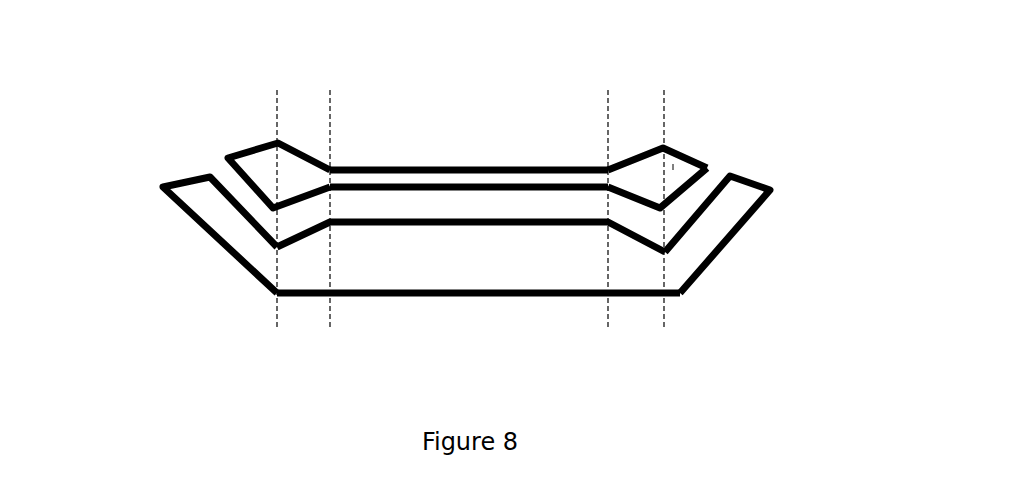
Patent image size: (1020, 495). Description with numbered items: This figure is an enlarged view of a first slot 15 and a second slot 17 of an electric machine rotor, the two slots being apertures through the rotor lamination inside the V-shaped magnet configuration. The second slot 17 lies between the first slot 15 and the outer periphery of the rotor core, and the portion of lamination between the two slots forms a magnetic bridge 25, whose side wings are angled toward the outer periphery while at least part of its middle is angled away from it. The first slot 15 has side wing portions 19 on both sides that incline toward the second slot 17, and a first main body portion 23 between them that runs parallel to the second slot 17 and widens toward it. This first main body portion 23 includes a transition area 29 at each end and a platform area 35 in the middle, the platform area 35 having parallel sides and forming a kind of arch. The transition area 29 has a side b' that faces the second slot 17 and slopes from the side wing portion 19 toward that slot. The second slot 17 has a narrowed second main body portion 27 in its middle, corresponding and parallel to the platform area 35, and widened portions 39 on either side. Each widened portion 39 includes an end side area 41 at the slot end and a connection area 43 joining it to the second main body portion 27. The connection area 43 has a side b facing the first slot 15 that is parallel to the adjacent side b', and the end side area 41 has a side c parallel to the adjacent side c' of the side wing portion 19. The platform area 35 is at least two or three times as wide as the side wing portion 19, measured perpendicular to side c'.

The first slot 15 is at (160, 187).
The second slot 17 is at (222, 158).
The side wing portions 19 is at (222, 217).
The first main body portion 23 is at (478, 321).
The magnetic bridge 25 is at (230, 174).
The second main body portion 27 is at (497, 168).
The transition area 29 is at (622, 270).
The platform area 35 is at (530, 263).
The widened portions 39 is at (684, 124).
The end side area 41 is at (677, 148).
The connection area 43 is at (642, 168).
The side b is at (706, 278).
The side b' is at (705, 321).
The side c is at (739, 148).
The side c' is at (771, 253).